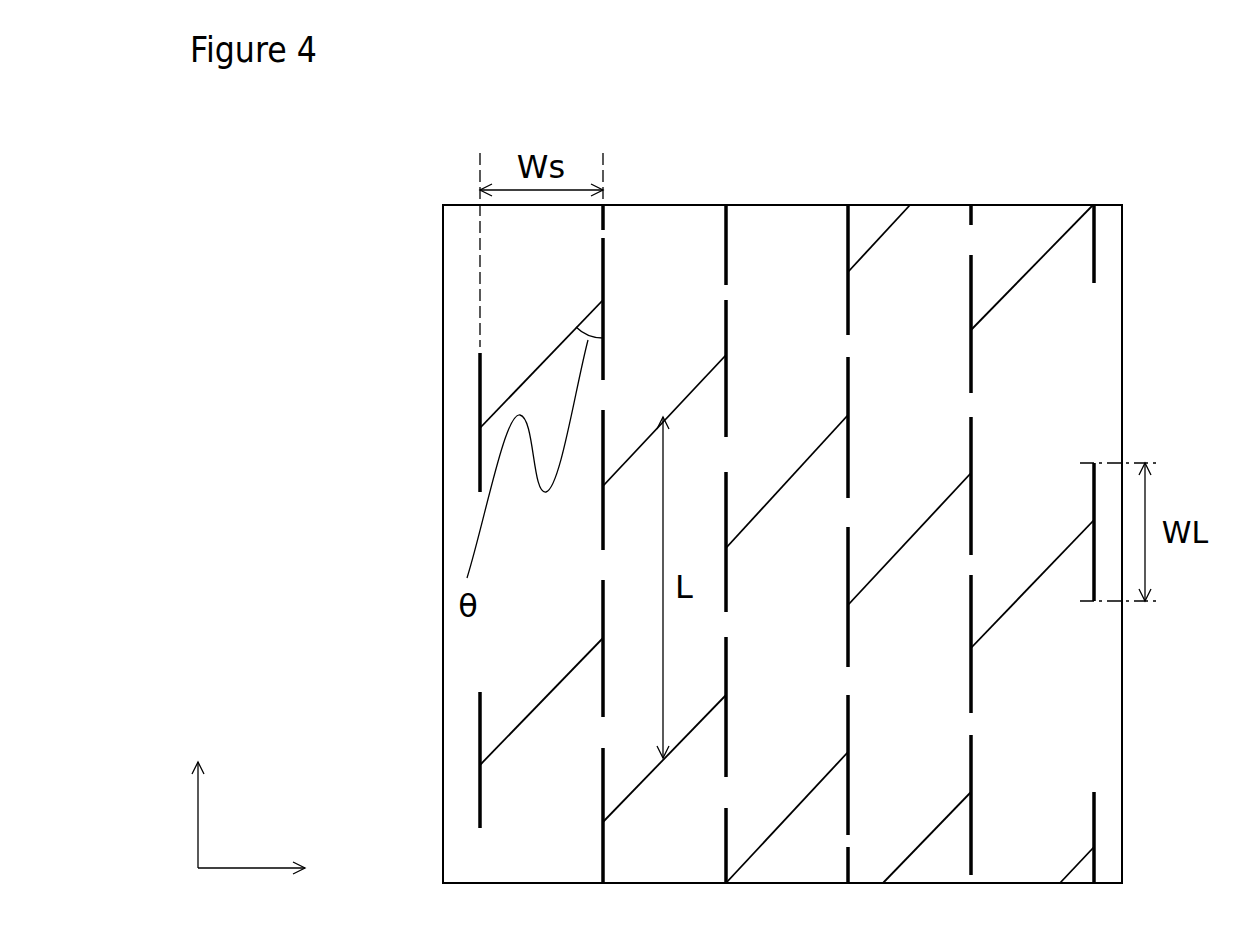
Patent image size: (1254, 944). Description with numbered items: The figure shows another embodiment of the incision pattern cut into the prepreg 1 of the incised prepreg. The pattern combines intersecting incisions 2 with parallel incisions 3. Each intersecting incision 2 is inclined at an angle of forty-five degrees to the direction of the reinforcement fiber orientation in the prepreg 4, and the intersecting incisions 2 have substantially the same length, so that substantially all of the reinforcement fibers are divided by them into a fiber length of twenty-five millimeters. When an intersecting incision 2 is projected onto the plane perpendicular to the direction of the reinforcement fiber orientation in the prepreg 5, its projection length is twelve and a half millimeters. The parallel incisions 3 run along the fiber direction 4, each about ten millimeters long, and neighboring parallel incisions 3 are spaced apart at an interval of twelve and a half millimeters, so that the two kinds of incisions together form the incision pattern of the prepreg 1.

The prepreg 1 is at (1117, 410).
The intersecting incision 2 is at (1055, 240).
The parallel incision 3 is at (1094, 825).
The direction of the reinforcement fiber orientation in the prepreg 4 is at (200, 818).
The plane perpendicular to the direction of the reinforcement fiber orientation in t 5 is at (255, 868).